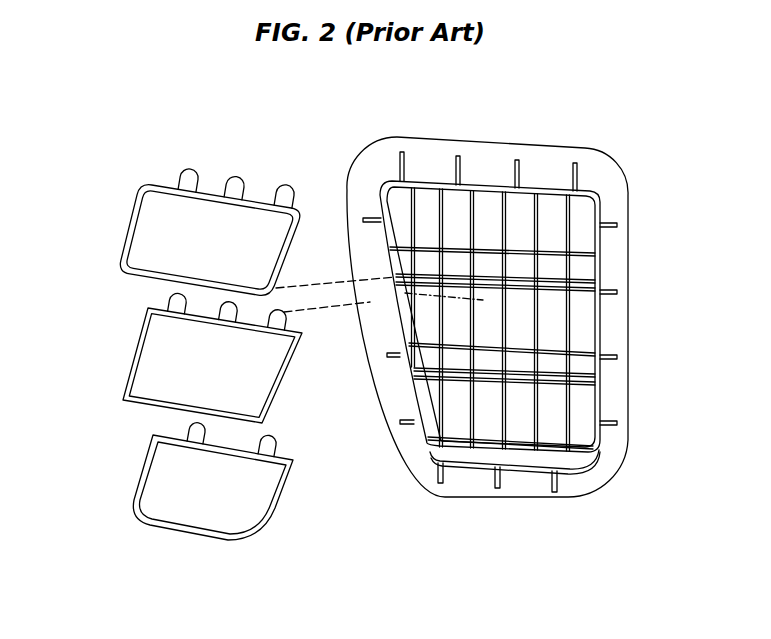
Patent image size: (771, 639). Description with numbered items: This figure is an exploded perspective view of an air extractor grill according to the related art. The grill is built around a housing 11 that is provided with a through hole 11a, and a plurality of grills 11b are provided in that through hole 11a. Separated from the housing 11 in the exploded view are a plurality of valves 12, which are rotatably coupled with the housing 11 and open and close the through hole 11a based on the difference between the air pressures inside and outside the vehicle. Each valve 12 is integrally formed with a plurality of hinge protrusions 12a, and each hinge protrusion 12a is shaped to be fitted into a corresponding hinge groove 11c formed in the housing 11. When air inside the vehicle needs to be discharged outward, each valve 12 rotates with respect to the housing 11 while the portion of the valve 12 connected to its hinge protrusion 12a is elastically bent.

The housing 11 is at (621, 404).
The through hole 11a is at (415, 182).
The grills 11b is at (578, 200).
The hinge groove 11c is at (432, 178).
The valve 12 is at (142, 230).
The hinge protrusion 12a is at (275, 183).